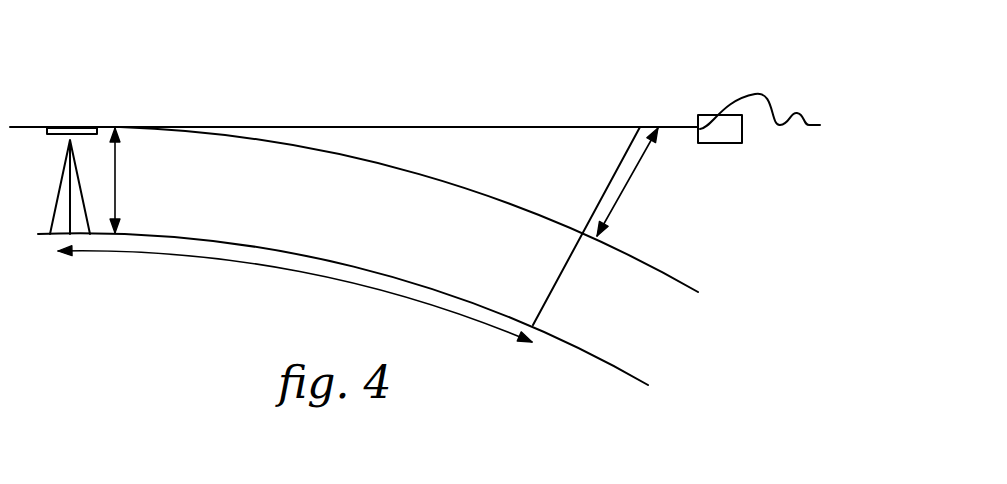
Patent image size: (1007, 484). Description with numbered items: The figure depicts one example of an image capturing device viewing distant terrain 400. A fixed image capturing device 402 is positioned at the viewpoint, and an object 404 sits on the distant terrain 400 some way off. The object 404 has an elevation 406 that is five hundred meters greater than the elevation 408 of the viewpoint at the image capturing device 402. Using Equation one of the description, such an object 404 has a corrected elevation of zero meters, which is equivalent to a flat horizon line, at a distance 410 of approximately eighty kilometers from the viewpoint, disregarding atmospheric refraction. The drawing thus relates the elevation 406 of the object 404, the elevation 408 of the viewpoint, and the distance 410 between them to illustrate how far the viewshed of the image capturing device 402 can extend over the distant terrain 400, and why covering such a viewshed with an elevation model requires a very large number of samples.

The distant terrain 400 is at (795, 80).
The fixed image capturing device 402 is at (70, 127).
The object 404 is at (720, 143).
The elevation 406 is at (618, 187).
The elevation of the viewpoint 408 is at (118, 173).
The distance 410 is at (162, 253).